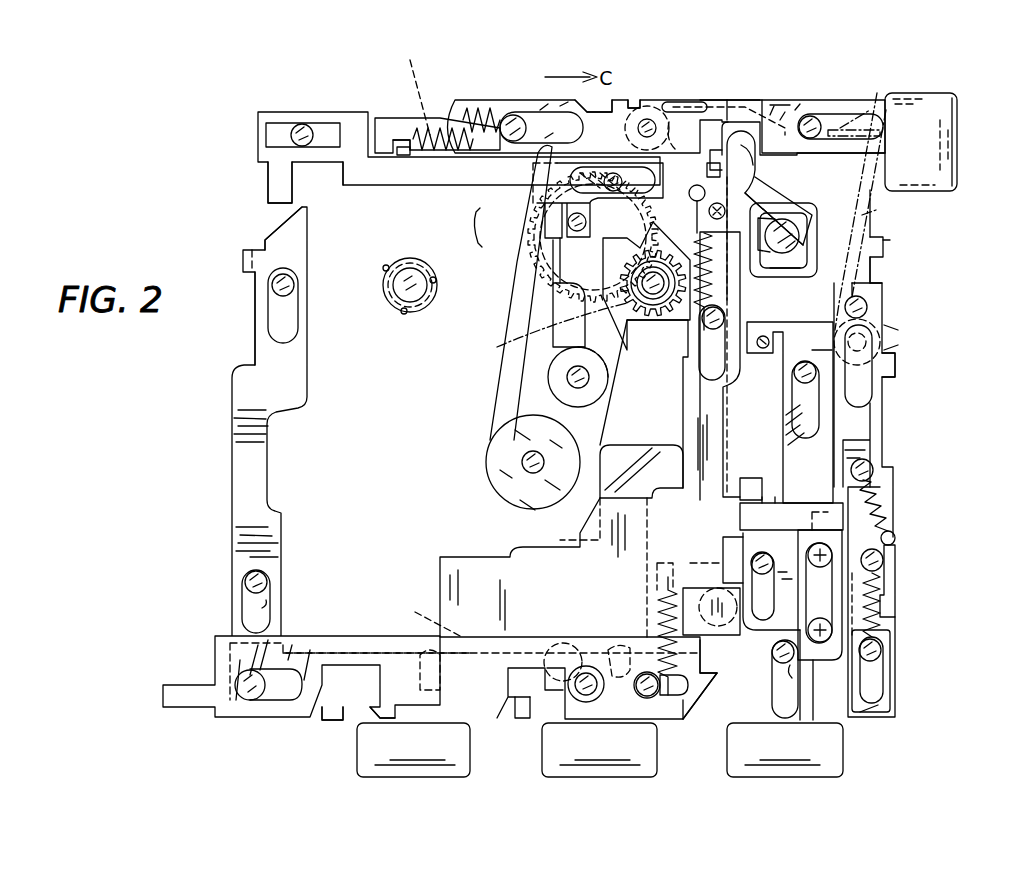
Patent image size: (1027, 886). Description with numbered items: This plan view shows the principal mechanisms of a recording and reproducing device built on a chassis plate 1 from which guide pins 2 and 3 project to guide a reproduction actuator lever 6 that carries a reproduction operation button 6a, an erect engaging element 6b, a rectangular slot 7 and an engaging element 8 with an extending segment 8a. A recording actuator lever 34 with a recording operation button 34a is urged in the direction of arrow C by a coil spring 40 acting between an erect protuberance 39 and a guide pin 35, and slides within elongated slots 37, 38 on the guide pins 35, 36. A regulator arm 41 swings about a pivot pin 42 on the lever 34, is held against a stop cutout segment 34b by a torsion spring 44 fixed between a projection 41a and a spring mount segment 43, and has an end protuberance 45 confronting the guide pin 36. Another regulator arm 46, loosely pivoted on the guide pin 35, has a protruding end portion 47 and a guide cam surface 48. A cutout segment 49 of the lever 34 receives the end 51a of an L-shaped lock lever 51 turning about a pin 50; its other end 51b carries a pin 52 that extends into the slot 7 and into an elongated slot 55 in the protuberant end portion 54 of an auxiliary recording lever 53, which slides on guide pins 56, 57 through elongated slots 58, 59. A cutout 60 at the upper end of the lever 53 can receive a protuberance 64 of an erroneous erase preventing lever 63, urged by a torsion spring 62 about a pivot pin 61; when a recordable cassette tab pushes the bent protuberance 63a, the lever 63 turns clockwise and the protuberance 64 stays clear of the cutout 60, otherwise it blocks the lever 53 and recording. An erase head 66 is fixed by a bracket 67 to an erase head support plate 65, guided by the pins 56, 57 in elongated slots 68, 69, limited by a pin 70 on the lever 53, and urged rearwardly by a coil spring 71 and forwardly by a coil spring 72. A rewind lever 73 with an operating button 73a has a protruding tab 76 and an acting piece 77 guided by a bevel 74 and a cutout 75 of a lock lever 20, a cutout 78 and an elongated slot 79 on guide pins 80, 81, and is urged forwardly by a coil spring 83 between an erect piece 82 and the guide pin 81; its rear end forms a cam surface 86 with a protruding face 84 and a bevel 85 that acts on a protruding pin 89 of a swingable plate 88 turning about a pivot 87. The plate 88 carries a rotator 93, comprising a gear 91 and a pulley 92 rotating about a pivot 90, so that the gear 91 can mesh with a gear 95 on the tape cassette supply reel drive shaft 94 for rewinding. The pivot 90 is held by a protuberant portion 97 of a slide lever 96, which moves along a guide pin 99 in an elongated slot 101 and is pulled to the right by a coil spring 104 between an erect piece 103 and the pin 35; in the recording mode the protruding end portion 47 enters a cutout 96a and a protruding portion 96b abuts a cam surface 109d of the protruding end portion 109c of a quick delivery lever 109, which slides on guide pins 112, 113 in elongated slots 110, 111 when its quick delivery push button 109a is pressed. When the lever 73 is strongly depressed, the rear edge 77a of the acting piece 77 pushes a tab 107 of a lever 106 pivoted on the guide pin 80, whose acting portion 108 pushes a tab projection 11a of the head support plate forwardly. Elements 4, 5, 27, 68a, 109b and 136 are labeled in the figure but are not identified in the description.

The chassis plate 1 is at (898, 330).
The guide pin 2 is at (798, 385).
The guide pin 3 is at (795, 665).
The opening blade 4 is at (872, 400).
The drive member 5 is at (795, 712).
The reproduction actuator lever 6 is at (882, 453).
The reproduction operation button 6a is at (840, 748).
The erect engaging element 6b is at (700, 722).
The rectangular slot 7 is at (815, 350).
The engaging element 8 is at (866, 198).
The extending segment 8a is at (731, 150).
The tab projection 11a is at (628, 700).
The lock lever 20 is at (334, 635).
The projection 27 is at (712, 677).
The recording actuator lever 34 is at (890, 105).
The recording operation button 34a is at (950, 110).
The stop cutout segment 34b is at (712, 100).
The guide pin 35 is at (505, 140).
The guide pin 36 is at (818, 140).
The elongated slot 37 is at (545, 125).
The elongated slot 38 is at (870, 133).
The erect protuberance 39 is at (455, 104).
The coil spring 40 is at (508, 116).
The regulator arm 41 is at (735, 105).
The projection 41a is at (690, 104).
The pivot pin 42 is at (636, 132).
The spring mount segment 43 is at (595, 108).
The torsion spring 44 is at (635, 104).
The end protuberance 45 is at (790, 125).
The regulator arm 46 is at (392, 125).
The protruding end portion 47 is at (394, 156).
The guide cam surface 48 is at (440, 130).
The cutout segment 49 is at (770, 120).
The pin 50 is at (697, 230).
The L-shaped lock lever 51 is at (790, 192).
The end 51a is at (752, 160).
The other end 51b is at (760, 200).
The pin 52 is at (795, 235).
The auxiliary recording lever 53 is at (872, 432).
The protuberant end portion 54 is at (880, 283).
The elongated slot 55 is at (778, 264).
The guide pin 56 is at (870, 305).
The guide pin 57 is at (882, 650).
The elongated slot 58 is at (870, 335).
The elongated slot 59 is at (880, 718).
The cutout 60 is at (884, 262).
The pivot pin 61 is at (845, 338).
The torsion spring 62 is at (880, 368).
The erroneous erase preventing lever 63 is at (868, 214).
The bent protuberance 63a is at (845, 128).
The protuberance 64 is at (892, 242).
The erase head support plate 65 is at (773, 623).
The erase head 66 is at (754, 478).
The bracket 67 is at (805, 505).
The elongated slot 68 is at (752, 563).
The hidden portion 68a is at (752, 563).
The elongated slot 69 is at (874, 680).
The pin 70 is at (890, 545).
The coil spring 71 is at (885, 500).
The coil spring 72 is at (878, 625).
The rewind lever 73 is at (645, 545).
The operating button 73a is at (655, 760).
The bevel 74 is at (512, 715).
The cutout 75 is at (548, 655).
The protruding tab 76 is at (525, 718).
The acting piece 77 is at (450, 720).
The rear edge 77a is at (422, 660).
The cutout 78 is at (555, 705).
The elongated slot 79 is at (732, 384).
The guide pin 80 is at (585, 665).
The guide pin 81 is at (724, 360).
The erect piece 82 is at (714, 203).
The coil spring 83 is at (815, 273).
The protruding face 84 is at (652, 300).
The bevel 85 is at (658, 310).
The cam surface 86 is at (578, 470).
The pivot 87 is at (567, 377).
The swingable plate 88 is at (585, 312).
The protruding pin 89 is at (694, 200).
The pivot 90 is at (577, 233).
The gear 91 is at (541, 230).
The pulley 92 is at (530, 207).
The rotator 93 is at (464, 227).
The tape cassette supply reel drive shaft 94 is at (558, 286).
The gear 95 is at (548, 330).
The slide lever 96 is at (378, 195).
The cutout 96a is at (365, 160).
The protruding portion 96b is at (268, 190).
The protuberant portion 97 is at (530, 240).
The guide pin 99 is at (300, 125).
The elongated slot 101 is at (332, 128).
The erect piece 103 is at (408, 158).
The coil spring 104 is at (407, 85).
The lever 106 is at (600, 615).
The tab 107 is at (421, 616).
The acting portion 108 is at (620, 646).
The quick delivery lever 109 is at (258, 387).
The quick delivery push button 109a is at (365, 722).
The tab 109b is at (330, 718).
The protruding end portion 109c is at (296, 232).
The cam surface 109d is at (285, 214).
The elongated slot 110 is at (295, 330).
The elongated slot 111 is at (266, 603).
The guide pin 112 is at (272, 292).
The guide pin 113 is at (245, 580).
The pin 136 is at (715, 150).